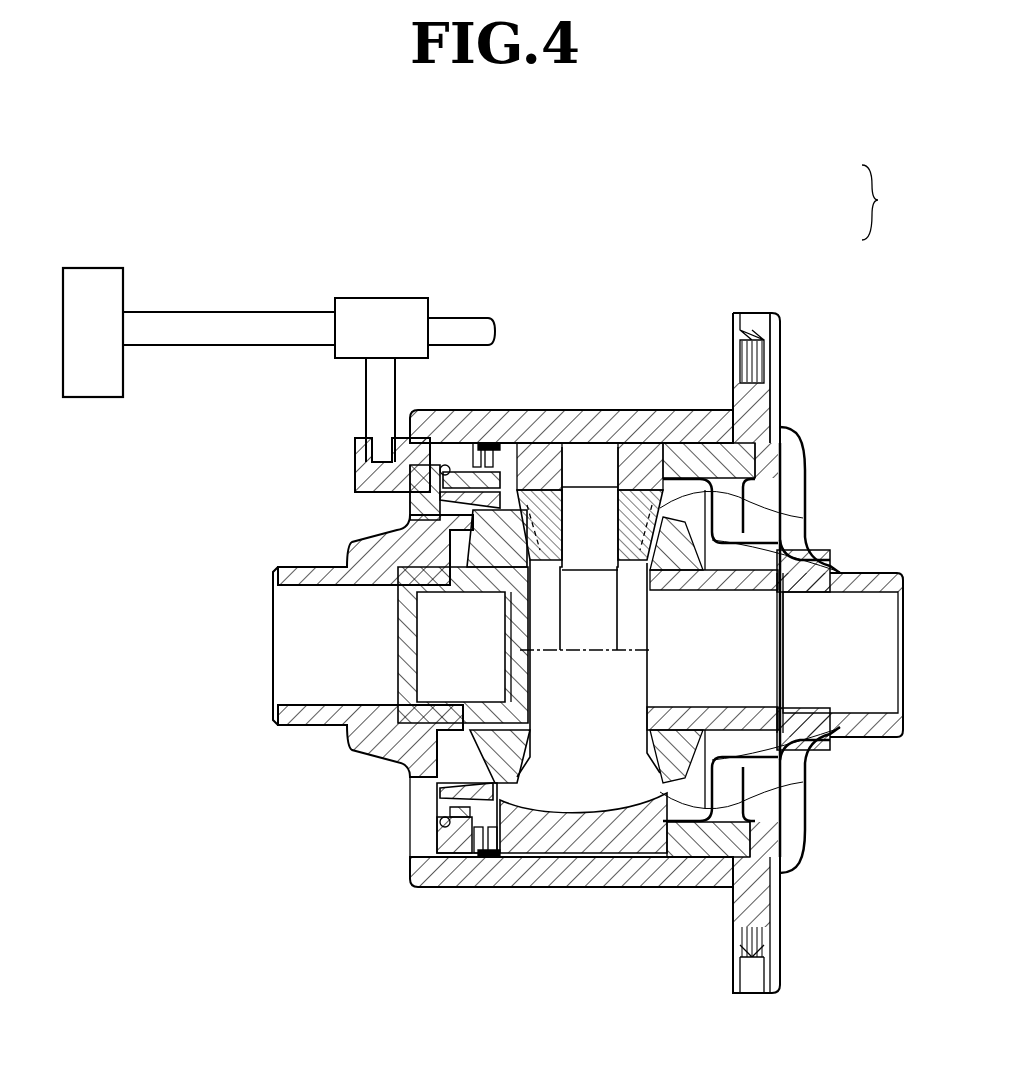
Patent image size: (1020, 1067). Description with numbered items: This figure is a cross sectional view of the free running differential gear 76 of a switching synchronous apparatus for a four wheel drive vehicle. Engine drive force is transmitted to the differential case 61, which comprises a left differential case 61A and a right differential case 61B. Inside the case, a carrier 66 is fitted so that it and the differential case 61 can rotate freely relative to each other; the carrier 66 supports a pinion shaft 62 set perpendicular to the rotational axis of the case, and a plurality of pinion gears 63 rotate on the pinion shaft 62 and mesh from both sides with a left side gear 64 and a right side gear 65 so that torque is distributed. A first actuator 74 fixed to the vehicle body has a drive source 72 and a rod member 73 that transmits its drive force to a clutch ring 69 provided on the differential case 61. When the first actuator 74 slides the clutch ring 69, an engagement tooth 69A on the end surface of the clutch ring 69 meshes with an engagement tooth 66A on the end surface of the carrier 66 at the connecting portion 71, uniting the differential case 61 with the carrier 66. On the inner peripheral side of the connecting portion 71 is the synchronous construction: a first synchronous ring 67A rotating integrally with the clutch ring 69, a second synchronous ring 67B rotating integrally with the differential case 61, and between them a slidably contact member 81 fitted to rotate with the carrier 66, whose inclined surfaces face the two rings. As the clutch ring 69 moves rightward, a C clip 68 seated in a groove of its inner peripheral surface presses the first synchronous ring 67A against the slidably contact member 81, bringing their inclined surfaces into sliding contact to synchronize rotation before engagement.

The differential case 61 is at (894, 202).
The left differential case 61A is at (745, 333).
The right differential case 61B is at (775, 333).
The pinion shaft 62 is at (590, 620).
The pinion gears 63 is at (640, 500).
The left side gear 64 is at (463, 593).
The right side gear 65 is at (720, 500).
The carrier 66 is at (600, 443).
The engagement tooth 66A is at (492, 443).
The first synchronous ring 67A is at (470, 498).
The second synchronous ring 67B is at (470, 480).
The C clip 68 is at (378, 448).
The clutch ring 69 is at (425, 485).
The engagement tooth 69A is at (482, 440).
The connecting portion 71 is at (483, 445).
The drive source 72 is at (97, 283).
The rod member 73 is at (275, 325).
The first actuator 74 is at (215, 285).
The free running differential gear 76 is at (805, 417).
The slidably contact member 81 is at (447, 470).